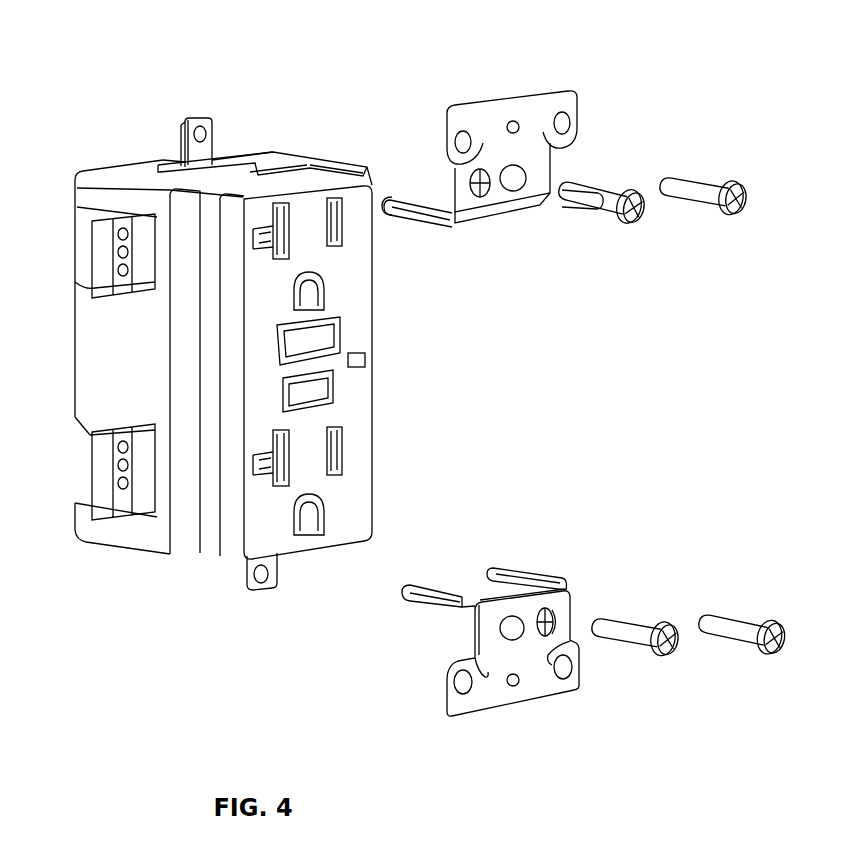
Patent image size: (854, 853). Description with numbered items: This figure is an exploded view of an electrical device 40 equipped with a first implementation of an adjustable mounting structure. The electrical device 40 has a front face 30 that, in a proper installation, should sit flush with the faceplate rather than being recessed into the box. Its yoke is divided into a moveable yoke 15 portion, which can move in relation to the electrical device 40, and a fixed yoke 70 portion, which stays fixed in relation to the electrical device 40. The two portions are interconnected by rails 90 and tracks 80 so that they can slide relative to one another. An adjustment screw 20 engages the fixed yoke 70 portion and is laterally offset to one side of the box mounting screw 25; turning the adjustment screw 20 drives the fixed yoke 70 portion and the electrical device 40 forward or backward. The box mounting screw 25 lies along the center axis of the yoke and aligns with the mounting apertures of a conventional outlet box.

The moveable yoke portion 15 is at (565, 103).
The adjustment screw 20 is at (643, 217).
The box mounting screw 25 is at (733, 200).
The face of the electrical device 30 is at (262, 418).
The electrical device 40 is at (232, 297).
The fixed yoke portion 70 is at (185, 130).
The tracks 80 is at (447, 223).
The rails 90 is at (273, 153).